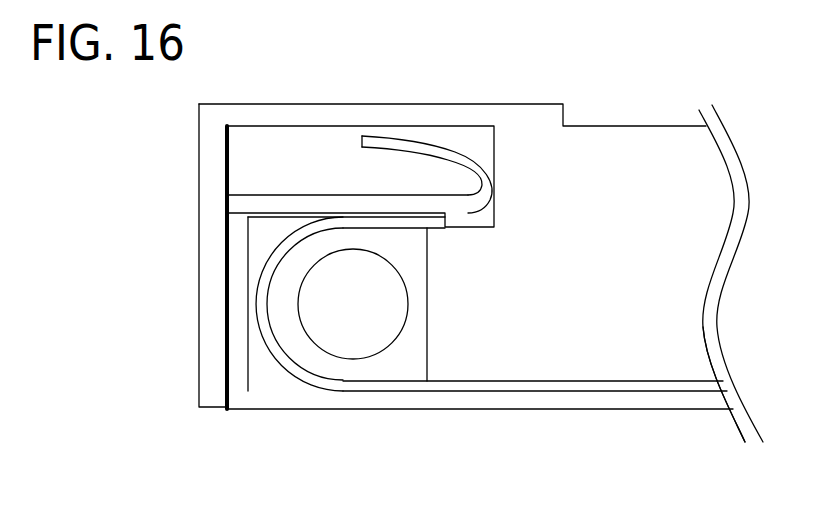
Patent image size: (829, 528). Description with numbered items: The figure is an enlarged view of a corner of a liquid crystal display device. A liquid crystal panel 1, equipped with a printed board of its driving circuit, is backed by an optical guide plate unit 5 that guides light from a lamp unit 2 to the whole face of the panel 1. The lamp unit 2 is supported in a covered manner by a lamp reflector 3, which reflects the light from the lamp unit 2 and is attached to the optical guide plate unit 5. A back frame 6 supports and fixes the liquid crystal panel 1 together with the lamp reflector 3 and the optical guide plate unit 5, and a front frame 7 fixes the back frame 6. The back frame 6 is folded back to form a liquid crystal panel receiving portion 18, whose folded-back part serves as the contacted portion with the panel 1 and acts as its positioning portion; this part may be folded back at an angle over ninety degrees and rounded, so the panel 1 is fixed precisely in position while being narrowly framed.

The liquid crystal panel 1 is at (695, 168).
The lamp unit 2 is at (360, 335).
The lamp reflector 3 is at (297, 368).
The optical guide plate unit 5 is at (685, 317).
The back frame 6 is at (662, 398).
The front frame 7 is at (327, 118).
The liquid crystal panel receiving portion 18 is at (473, 170).